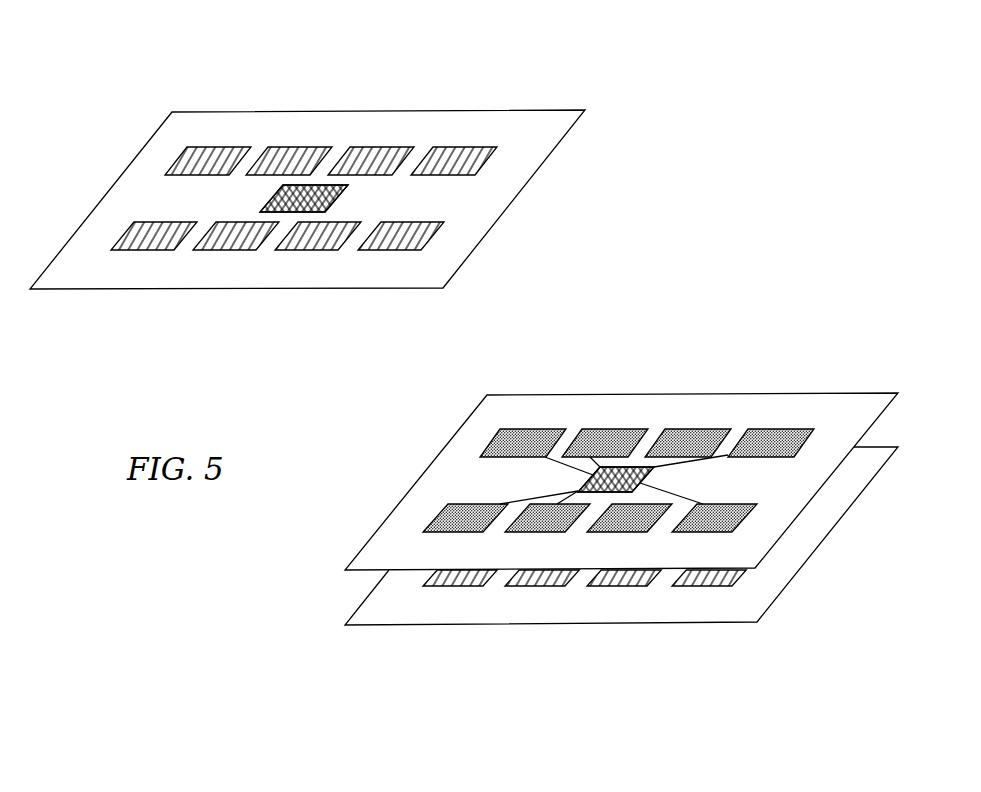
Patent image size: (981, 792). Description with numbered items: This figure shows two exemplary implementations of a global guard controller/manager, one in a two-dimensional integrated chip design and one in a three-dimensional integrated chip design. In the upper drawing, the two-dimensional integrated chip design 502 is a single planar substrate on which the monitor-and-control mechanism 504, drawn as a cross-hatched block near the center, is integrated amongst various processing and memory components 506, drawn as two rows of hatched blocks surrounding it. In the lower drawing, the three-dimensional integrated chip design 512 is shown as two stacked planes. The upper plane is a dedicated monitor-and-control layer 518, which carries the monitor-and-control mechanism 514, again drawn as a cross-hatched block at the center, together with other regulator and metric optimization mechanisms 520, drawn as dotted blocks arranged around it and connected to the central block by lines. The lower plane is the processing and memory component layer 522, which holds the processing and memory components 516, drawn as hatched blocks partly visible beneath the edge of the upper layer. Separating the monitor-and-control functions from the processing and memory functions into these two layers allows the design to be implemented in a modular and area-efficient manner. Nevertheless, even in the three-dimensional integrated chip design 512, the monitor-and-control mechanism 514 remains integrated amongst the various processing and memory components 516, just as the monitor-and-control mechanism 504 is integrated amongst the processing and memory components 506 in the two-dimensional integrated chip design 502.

The 2D integrated chip design 502 is at (152, 66).
The monitor-and-control mechanism 504 is at (307, 196).
The processing and memory components 506 is at (472, 160).
The 3D integrated chip design 512 is at (597, 474).
The monitor-and-control mechanism 514 is at (628, 470).
The processing and memory components 516 is at (740, 575).
The monitor-and-control layer 518 is at (378, 524).
The regulator and metric optimization mechanisms 520 is at (792, 450).
The processing and memory component layer 522 is at (370, 591).